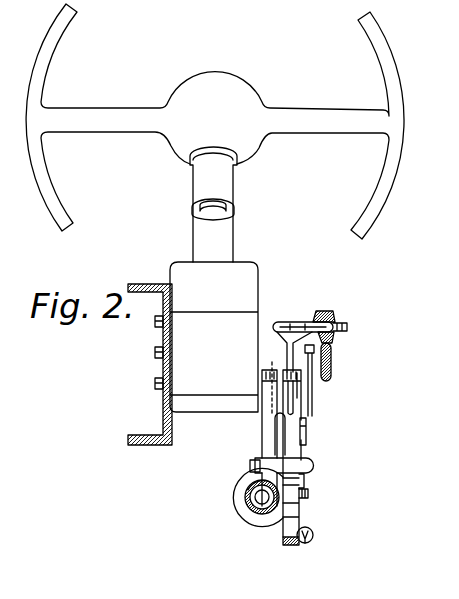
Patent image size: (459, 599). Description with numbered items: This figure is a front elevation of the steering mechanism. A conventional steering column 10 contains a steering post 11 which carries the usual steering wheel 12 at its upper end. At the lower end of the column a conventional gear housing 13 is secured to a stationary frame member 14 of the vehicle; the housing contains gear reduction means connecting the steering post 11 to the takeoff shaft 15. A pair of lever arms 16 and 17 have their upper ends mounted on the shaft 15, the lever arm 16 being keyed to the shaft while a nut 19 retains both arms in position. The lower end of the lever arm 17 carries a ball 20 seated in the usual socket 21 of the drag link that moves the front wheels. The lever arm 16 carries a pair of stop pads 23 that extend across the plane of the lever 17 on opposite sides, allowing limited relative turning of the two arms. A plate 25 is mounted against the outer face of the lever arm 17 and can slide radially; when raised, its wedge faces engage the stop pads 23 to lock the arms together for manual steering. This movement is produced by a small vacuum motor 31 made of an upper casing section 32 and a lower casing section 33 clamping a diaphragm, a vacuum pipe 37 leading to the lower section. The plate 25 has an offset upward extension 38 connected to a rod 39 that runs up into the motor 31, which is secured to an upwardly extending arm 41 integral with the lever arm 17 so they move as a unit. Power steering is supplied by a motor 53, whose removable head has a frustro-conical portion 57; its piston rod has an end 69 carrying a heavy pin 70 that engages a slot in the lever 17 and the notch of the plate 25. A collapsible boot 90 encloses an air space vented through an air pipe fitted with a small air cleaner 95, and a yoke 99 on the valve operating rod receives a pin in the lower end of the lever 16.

The steering column 10 is at (233, 190).
The steering post 11 is at (200, 211).
The steering wheel 12 is at (405, 118).
The gear housing 13 is at (248, 262).
The frame member 14 is at (143, 283).
The takeoff shaft 15 is at (276, 378).
The lever arm 16 is at (261, 427).
The lever arm 17 is at (288, 421).
The nut 19 is at (302, 393).
The ball 20 is at (305, 543).
The socket 21 is at (313, 534).
The stop pads 23 is at (311, 464).
The plate 25 is at (304, 483).
The fluid pressure motor 31 is at (343, 312).
The upper casing section 32 is at (318, 311).
The lower casing section 33 is at (334, 340).
The vacuum pipe 37 is at (331, 365).
The upward extension 38 is at (306, 440).
The rod 39 is at (313, 386).
The upwardly extending arm 41 is at (278, 327).
The motor 53 is at (236, 518).
The frustro-conical portion 57 is at (245, 496).
The end 69 is at (278, 527).
The pin 70 is at (309, 493).
The boot 90 is at (250, 501).
The air cleaner 95 is at (250, 461).
The yoke 99 is at (250, 485).